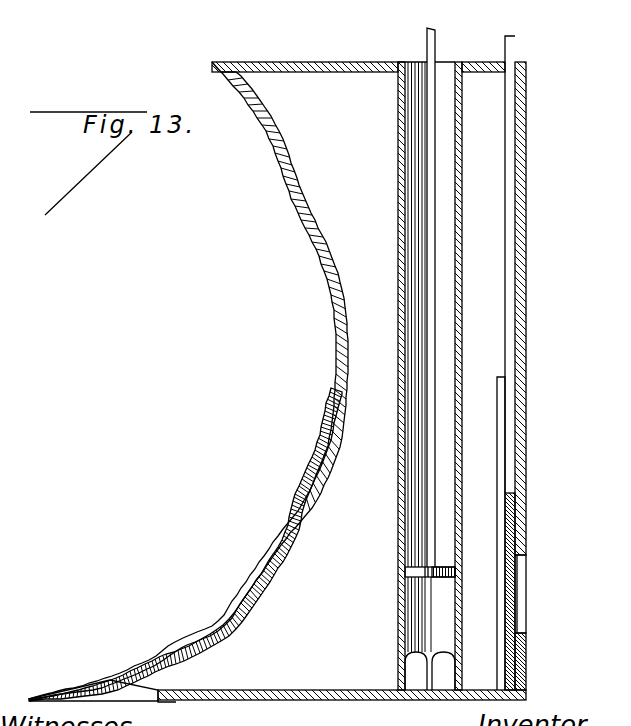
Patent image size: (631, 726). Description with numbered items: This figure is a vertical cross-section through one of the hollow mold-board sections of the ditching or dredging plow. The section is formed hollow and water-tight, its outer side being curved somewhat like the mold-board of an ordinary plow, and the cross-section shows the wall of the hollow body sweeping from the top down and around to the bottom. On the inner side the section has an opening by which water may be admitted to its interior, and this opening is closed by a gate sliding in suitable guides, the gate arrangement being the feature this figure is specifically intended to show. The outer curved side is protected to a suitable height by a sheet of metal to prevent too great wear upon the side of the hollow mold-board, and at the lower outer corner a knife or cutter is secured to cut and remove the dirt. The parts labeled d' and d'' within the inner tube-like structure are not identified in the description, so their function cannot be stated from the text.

The outer tube wall d' is at (528, 295).
The inner tube wall d'' is at (464, 376).